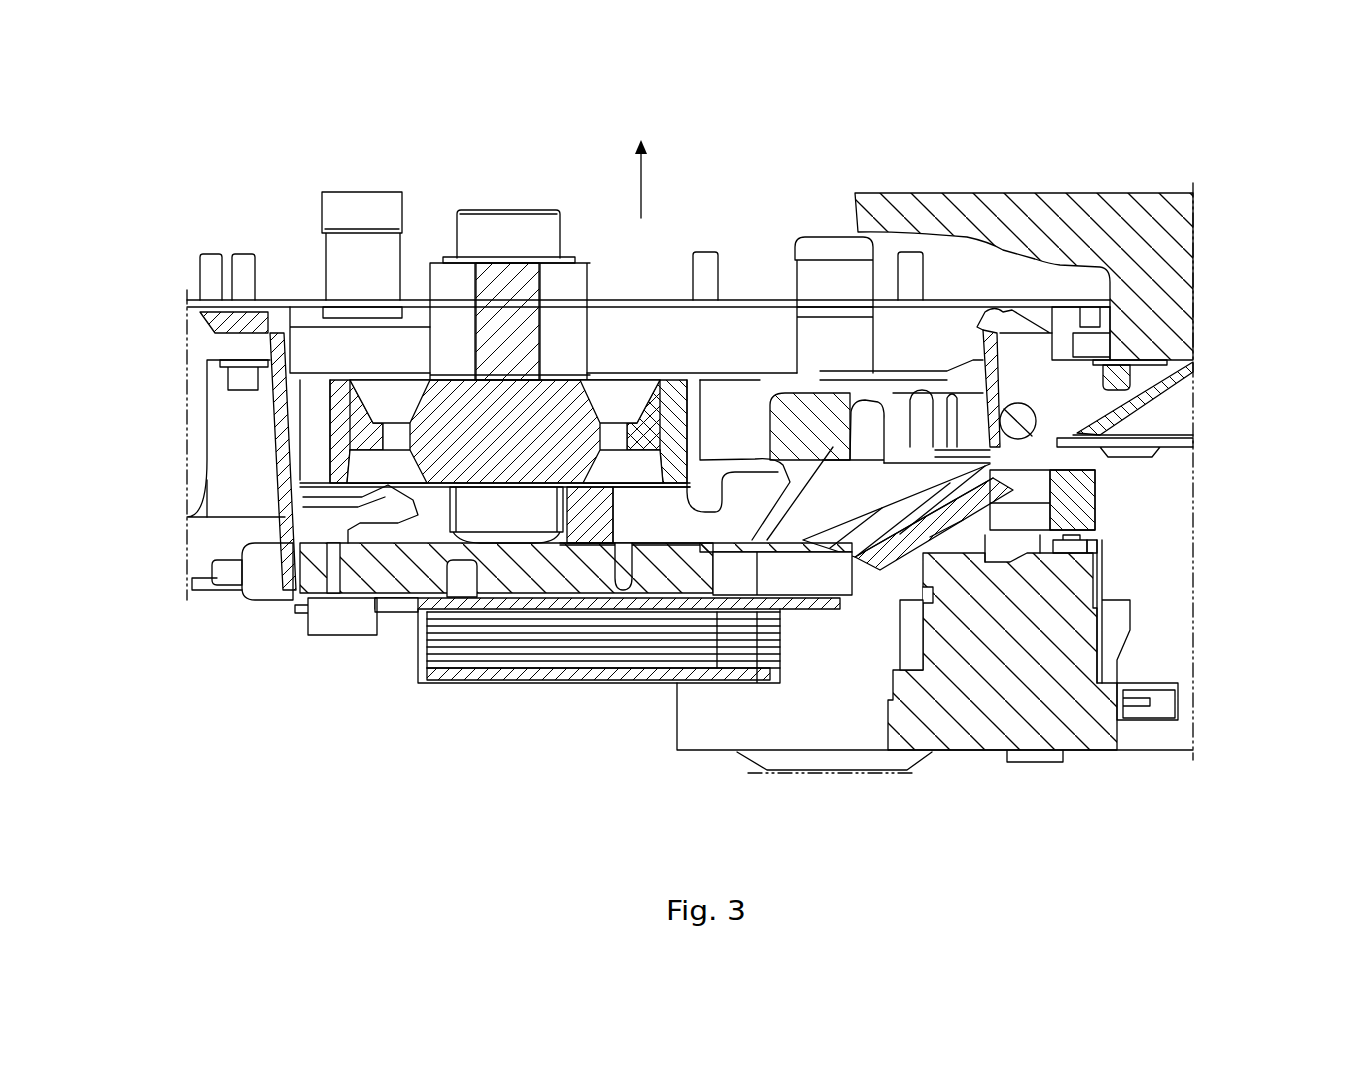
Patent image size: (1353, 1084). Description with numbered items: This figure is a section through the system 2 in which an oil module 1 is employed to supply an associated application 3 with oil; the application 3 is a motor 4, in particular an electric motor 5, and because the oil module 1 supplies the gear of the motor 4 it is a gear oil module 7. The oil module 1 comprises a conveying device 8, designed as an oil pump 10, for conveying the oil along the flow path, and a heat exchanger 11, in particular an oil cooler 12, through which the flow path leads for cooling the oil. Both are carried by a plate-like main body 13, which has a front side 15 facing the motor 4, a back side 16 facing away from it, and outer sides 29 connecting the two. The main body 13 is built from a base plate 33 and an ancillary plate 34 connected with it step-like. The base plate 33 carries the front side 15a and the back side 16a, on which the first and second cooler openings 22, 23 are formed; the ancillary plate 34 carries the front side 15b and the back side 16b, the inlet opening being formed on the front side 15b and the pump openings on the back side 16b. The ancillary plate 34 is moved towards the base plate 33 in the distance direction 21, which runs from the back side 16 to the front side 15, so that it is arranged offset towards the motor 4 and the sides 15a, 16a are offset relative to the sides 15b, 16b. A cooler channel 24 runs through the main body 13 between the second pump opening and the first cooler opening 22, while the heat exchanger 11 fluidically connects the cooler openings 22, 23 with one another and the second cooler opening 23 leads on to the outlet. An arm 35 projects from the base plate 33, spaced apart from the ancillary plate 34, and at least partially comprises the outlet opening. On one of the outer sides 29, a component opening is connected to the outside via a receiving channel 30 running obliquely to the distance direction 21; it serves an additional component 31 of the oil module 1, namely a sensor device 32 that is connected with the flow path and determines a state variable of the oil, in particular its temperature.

The oil module 1 is at (176, 589).
The system 2 is at (1246, 206).
The application 3 is at (287, 255).
The motor 4 is at (287, 255).
The electric motor 5 is at (322, 249).
The gear oil module 7 is at (236, 632).
The conveying device 8 is at (935, 773).
The oil pump 10 is at (1095, 752).
The heat exchanger 11 is at (599, 704).
The oil cooler 12 is at (600, 688).
The main body 13 is at (1098, 494).
The front side 15 is at (738, 436).
The front side of the base plate 15a is at (705, 545).
The front side of the ancillary plate 15b is at (1060, 470).
The back side 16 is at (607, 664).
The back side of the base plate 16a is at (513, 590).
The back side of the ancillary plate 16b is at (1087, 558).
The distance direction 21 is at (642, 190).
The first cooler opening 22 is at (733, 580).
The second cooler opening 23 is at (458, 582).
The cooler channel 24 is at (940, 527).
The outer sides 29 is at (1100, 533).
The receiving channel 30 is at (273, 590).
The additional component 31 is at (163, 571).
The sensor device 32 is at (227, 572).
The base plate 33 is at (600, 541).
The ancillary plate 34 is at (1008, 463).
The arm 35 is at (343, 623).